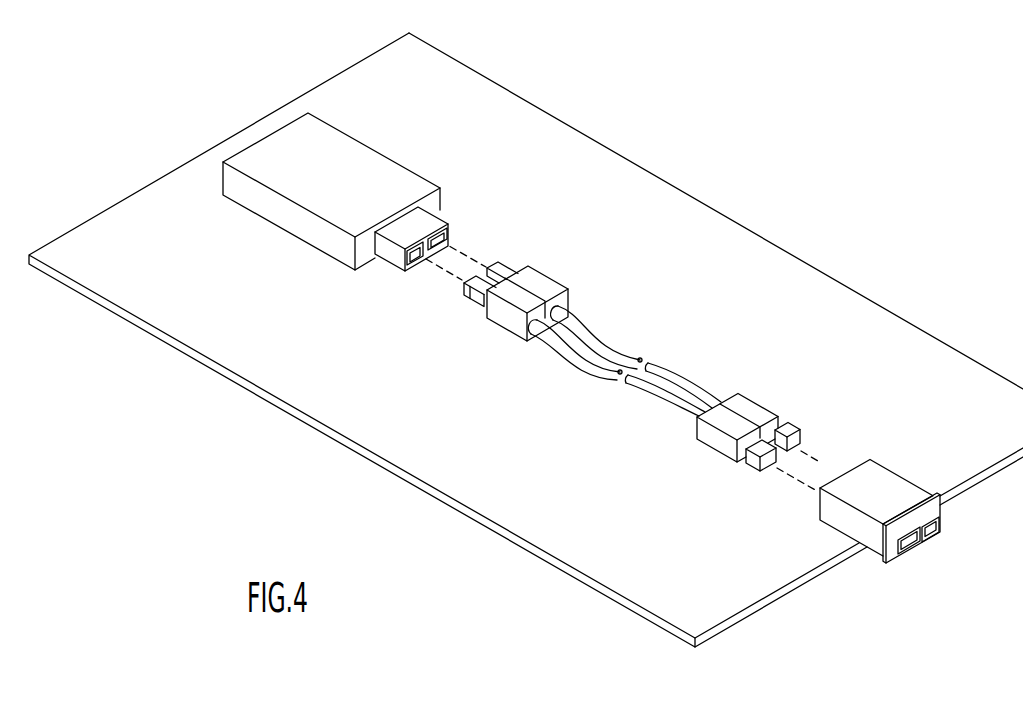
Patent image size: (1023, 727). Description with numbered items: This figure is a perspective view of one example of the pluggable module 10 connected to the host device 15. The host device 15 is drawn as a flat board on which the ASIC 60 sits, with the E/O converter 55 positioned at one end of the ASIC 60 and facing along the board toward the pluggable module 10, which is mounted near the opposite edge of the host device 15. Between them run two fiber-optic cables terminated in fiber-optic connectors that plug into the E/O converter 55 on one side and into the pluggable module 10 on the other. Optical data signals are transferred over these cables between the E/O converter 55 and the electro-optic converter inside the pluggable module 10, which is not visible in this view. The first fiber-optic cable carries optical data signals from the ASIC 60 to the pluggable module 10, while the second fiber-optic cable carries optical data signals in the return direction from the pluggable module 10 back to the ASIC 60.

The host device 15 is at (672, 212).
The ASIC 60 is at (290, 156).
The E/O converter 55 is at (428, 220).
The pluggable module 10 is at (880, 483).